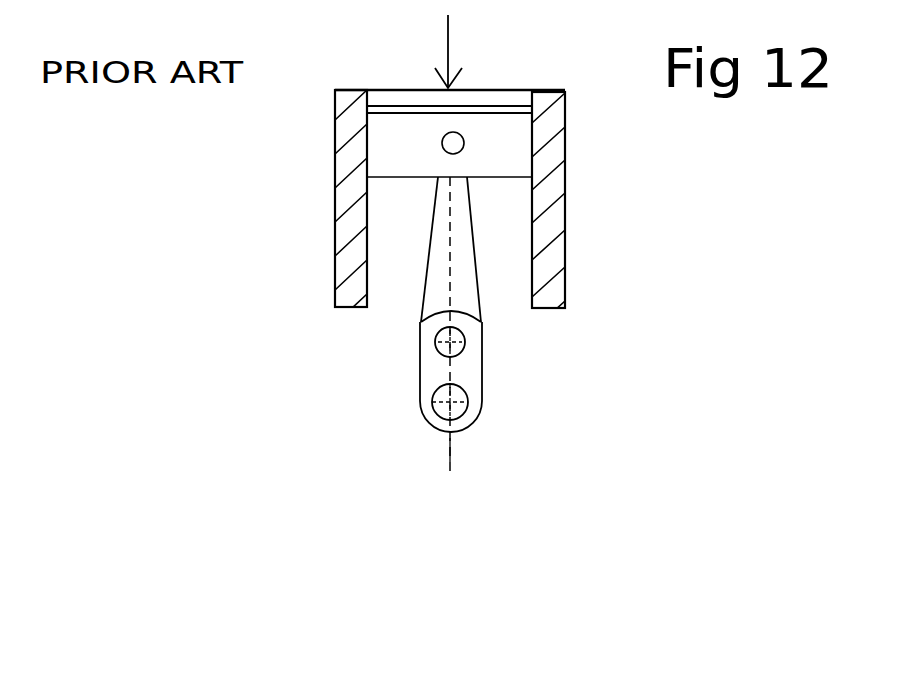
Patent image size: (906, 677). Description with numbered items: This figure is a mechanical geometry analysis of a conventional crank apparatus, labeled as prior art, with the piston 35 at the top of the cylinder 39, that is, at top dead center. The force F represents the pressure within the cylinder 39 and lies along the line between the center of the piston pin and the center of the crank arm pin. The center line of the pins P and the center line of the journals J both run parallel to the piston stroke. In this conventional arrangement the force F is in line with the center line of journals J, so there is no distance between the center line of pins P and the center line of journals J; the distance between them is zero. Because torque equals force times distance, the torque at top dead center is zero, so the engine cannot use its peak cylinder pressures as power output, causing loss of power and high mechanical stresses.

The piston 35 is at (398, 138).
The cylinder 39 is at (345, 250).
The center line of pins P is at (450, 372).
The center line of journals J is at (450, 450).
The force F is at (448, 20).